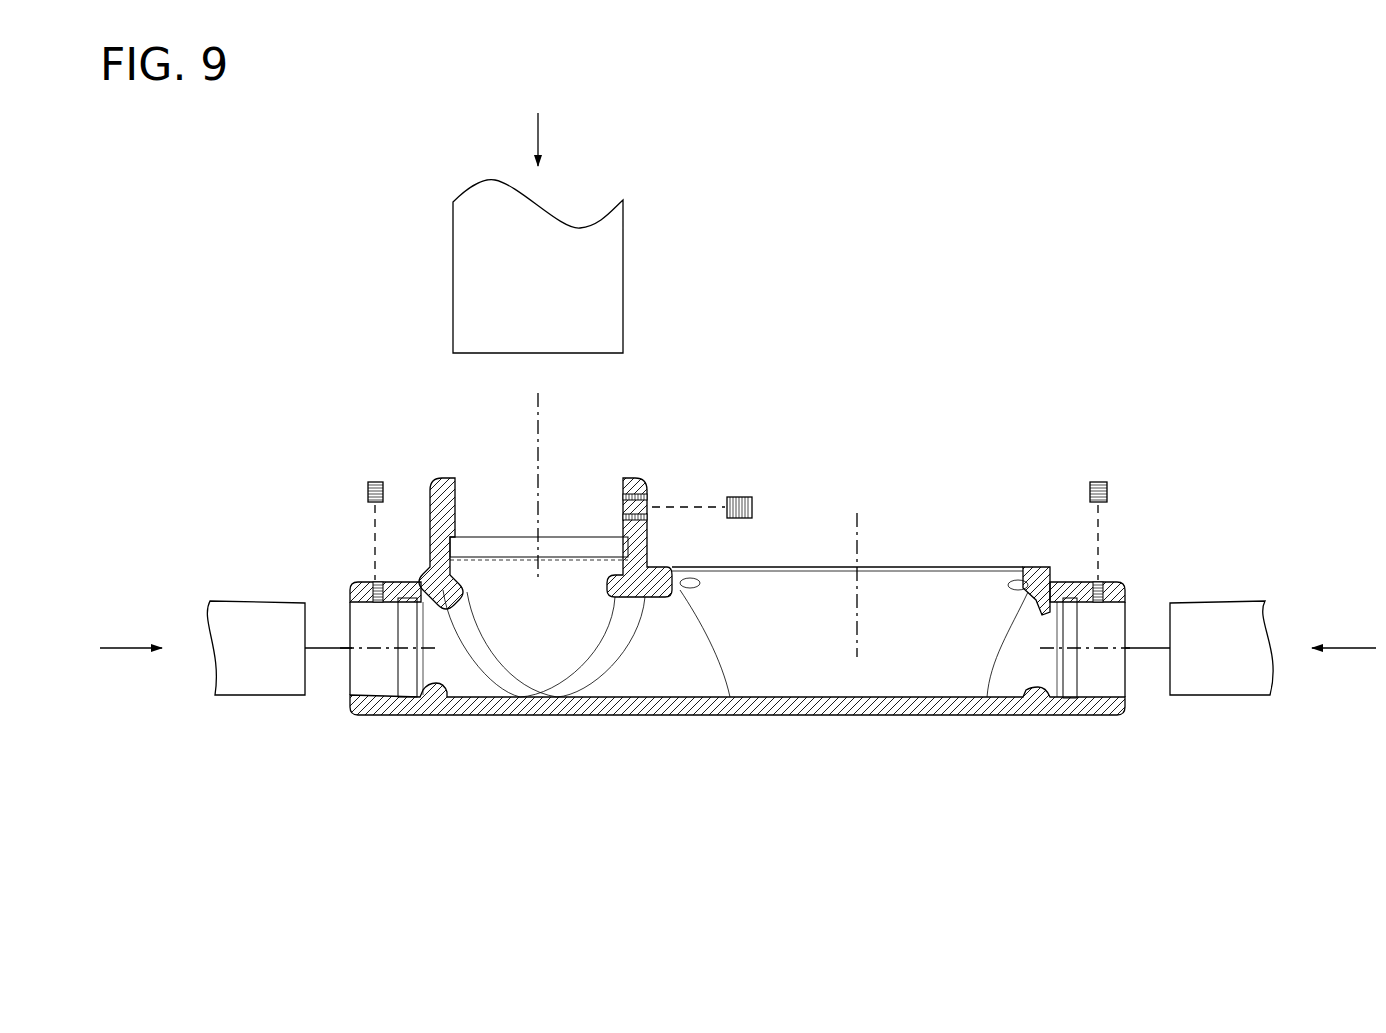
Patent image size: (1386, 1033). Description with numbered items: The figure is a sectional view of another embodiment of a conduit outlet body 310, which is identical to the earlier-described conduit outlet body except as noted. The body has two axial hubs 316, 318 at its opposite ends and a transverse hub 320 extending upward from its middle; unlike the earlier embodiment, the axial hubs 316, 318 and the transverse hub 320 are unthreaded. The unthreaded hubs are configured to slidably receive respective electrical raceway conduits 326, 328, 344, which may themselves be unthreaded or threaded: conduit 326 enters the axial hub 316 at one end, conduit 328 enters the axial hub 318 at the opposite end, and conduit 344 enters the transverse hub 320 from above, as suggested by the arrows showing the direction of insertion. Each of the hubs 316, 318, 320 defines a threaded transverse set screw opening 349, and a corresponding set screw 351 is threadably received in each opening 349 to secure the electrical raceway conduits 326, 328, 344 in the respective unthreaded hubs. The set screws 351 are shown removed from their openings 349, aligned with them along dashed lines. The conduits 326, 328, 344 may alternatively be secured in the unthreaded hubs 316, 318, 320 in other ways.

The conduit outlet body 310 is at (736, 570).
The axial hub 316 is at (350, 703).
The axial hub 318 is at (1127, 700).
The transverse hub 320 is at (630, 478).
The electrical raceway conduit 326 is at (243, 695).
The electrical raceway conduit 328 is at (1230, 697).
The electrical raceway conduit 344 is at (621, 252).
The threaded transverse set screw opening 349 is at (622, 508).
The set screw 351 is at (365, 492).